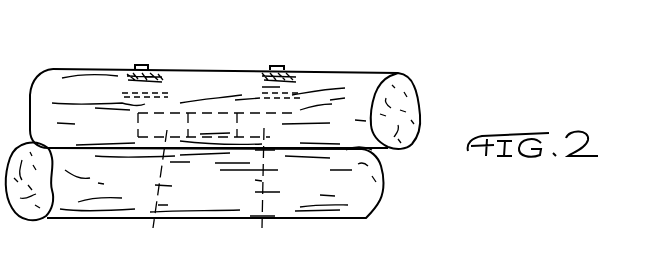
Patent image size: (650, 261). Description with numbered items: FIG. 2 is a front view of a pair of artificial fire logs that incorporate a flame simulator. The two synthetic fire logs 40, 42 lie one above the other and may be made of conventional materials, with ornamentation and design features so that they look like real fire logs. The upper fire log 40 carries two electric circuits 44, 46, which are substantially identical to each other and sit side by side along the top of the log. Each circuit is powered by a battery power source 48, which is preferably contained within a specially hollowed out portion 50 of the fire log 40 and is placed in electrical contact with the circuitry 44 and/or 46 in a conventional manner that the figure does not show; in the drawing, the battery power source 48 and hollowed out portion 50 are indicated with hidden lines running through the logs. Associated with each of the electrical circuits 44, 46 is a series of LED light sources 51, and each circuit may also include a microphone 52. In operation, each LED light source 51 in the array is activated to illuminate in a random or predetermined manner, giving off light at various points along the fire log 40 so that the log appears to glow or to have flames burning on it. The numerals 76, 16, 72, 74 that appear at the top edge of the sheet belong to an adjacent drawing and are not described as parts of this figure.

The synthetic fire log 40 is at (355, 50).
The synthetic fire log 42 is at (381, 183).
The electric circuit 44 is at (155, 71).
The electric circuit 46 is at (268, 69).
The battery power source 48 is at (257, 194).
The hollowed out portion 50 is at (161, 195).
The LED light source 51 is at (128, 80).
The microphone 52 is at (141, 68).
The element 76 (adjacent figure) 76 is at (453, 0).
The element 16 (adjacent figure) 16 is at (517, 0).
The element 72 (adjacent figure) 72 is at (561, 0).
The element 74 (adjacent figure) 74 is at (586, 0).